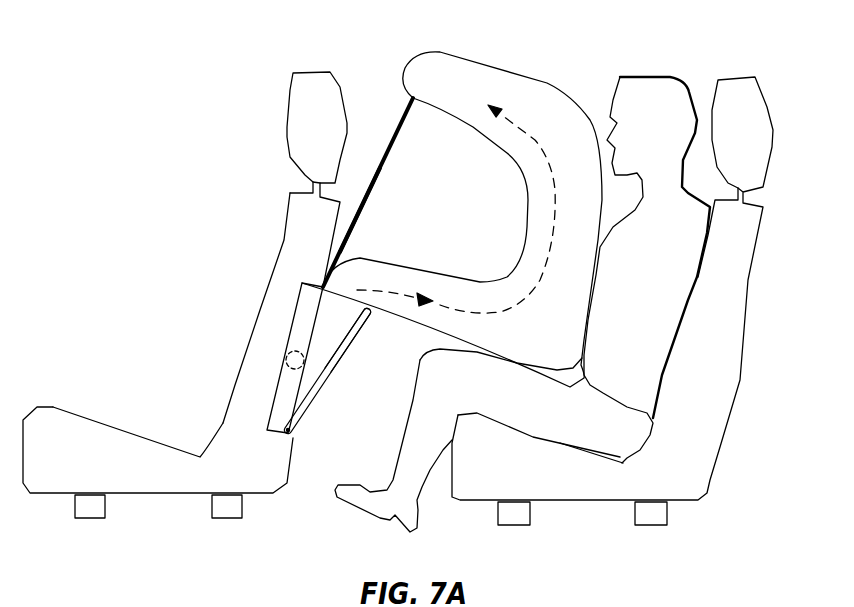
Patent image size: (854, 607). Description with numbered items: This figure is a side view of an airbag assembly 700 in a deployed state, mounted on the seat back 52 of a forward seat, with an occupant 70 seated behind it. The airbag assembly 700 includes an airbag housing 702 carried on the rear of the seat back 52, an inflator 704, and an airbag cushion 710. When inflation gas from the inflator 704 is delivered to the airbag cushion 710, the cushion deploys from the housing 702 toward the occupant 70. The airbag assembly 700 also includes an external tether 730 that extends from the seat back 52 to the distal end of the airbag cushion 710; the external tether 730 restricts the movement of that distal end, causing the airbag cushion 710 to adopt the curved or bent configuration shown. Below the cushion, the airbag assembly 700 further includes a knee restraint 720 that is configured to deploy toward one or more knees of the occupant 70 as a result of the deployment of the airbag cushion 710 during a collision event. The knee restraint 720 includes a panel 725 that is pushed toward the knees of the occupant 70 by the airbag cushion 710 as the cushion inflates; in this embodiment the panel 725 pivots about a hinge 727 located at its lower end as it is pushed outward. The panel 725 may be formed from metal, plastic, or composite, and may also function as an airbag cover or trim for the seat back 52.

The seat back 52 is at (318, 260).
The occupant 70 is at (676, 260).
The airbag assembly 700 is at (562, 74).
The airbag cushion 710 is at (481, 51).
The external tether 730 is at (386, 203).
The airbag housing 702 is at (287, 355).
The inflator 704 is at (290, 385).
The knee restraint 720 is at (344, 378).
The panel 725 is at (347, 357).
The hinge 727 is at (296, 444).